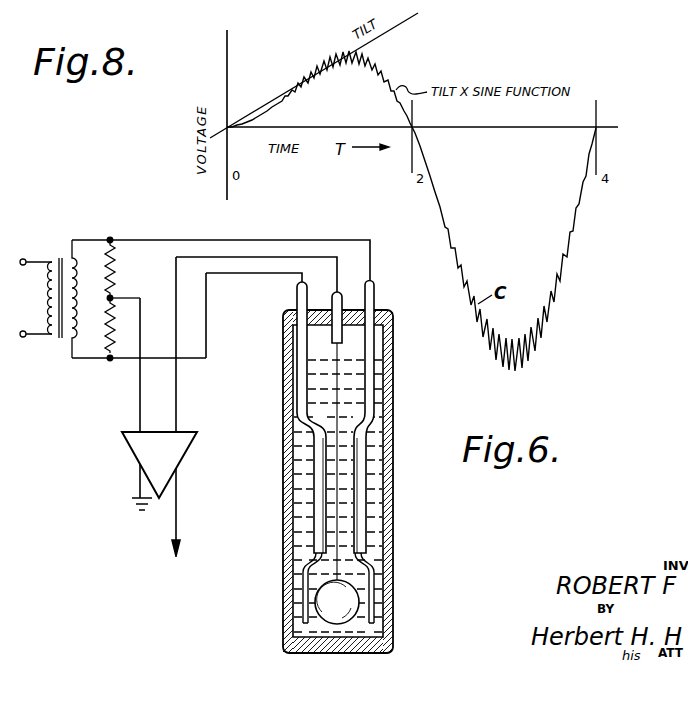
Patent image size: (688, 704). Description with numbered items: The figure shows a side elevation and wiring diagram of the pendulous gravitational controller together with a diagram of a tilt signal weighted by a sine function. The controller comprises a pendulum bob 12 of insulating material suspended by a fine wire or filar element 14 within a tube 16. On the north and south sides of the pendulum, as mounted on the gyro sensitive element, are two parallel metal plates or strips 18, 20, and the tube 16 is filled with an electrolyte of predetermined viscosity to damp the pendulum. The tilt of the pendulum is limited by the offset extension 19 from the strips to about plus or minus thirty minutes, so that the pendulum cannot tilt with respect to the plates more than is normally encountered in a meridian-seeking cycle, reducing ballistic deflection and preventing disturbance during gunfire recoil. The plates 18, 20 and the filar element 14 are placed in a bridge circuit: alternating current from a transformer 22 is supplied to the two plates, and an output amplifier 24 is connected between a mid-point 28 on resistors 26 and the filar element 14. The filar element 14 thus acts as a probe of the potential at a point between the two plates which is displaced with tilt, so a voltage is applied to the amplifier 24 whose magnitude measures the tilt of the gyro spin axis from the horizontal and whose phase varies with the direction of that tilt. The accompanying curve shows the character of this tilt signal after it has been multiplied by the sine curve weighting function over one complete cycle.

The pendulum bob 12 is at (358, 612).
The filar element 14 is at (355, 402).
The tube 16 is at (395, 529).
The metal plate 18 is at (320, 490).
The offset extension 19 is at (293, 618).
The metal plate 20 is at (352, 483).
The transformer 22 is at (62, 255).
The output amplifier 24 is at (133, 455).
The resistors 26 is at (113, 292).
The mid-point 28 is at (111, 298).